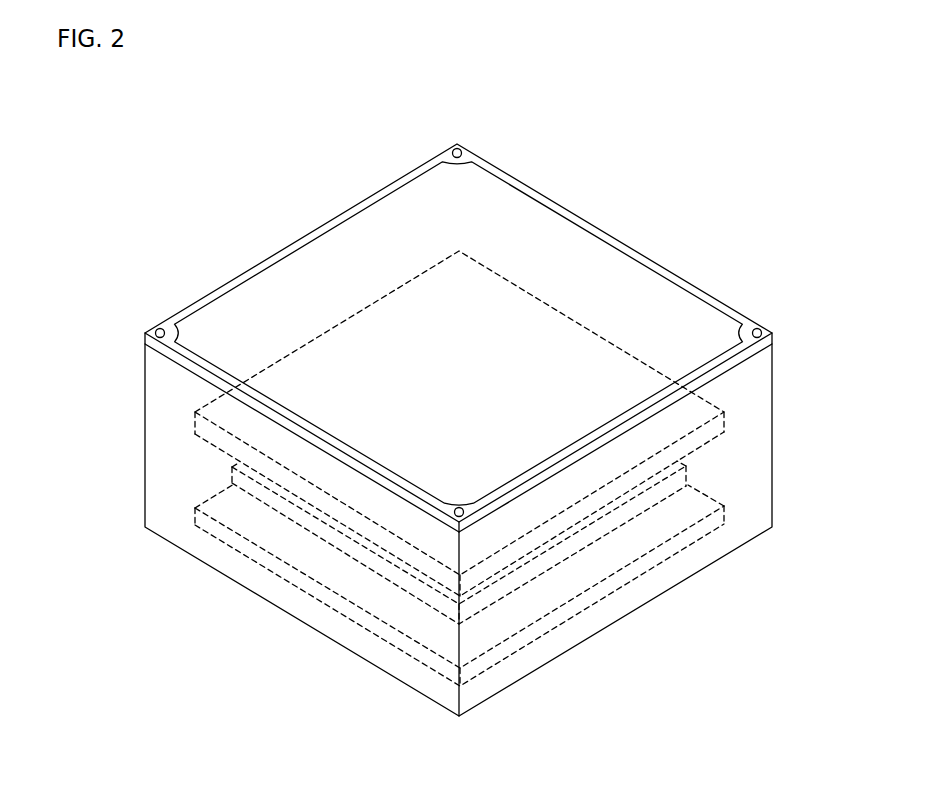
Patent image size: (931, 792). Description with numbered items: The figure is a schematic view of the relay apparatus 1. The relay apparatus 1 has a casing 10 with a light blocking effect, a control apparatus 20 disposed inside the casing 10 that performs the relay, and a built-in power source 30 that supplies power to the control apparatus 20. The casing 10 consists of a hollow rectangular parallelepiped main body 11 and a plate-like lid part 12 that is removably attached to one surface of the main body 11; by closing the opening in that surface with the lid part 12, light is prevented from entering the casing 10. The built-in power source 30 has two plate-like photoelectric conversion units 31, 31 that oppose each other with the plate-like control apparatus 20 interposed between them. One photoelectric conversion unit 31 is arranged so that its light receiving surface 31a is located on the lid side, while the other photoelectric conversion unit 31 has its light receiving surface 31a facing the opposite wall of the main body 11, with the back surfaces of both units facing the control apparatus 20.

The relay apparatus 1 is at (738, 118).
The casing 10 is at (273, 203).
The main body 11 is at (340, 634).
The lid part 12 is at (160, 327).
The control apparatus 20 is at (230, 479).
The built-in power source 30 is at (173, 622).
The photoelectric conversion unit 31 is at (243, 495).
The light receiving surface 31a is at (575, 345).